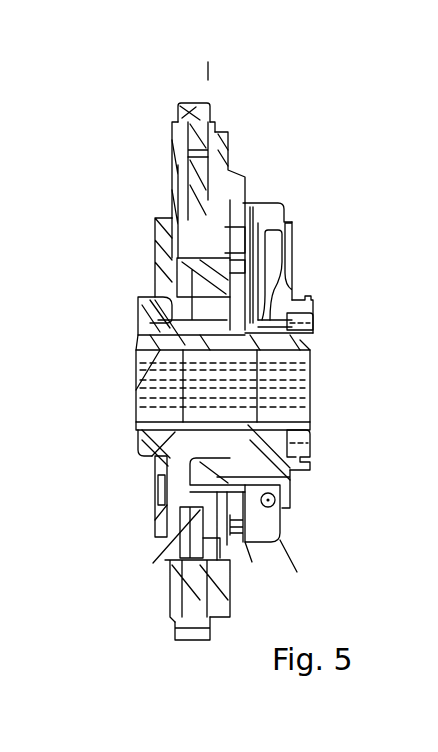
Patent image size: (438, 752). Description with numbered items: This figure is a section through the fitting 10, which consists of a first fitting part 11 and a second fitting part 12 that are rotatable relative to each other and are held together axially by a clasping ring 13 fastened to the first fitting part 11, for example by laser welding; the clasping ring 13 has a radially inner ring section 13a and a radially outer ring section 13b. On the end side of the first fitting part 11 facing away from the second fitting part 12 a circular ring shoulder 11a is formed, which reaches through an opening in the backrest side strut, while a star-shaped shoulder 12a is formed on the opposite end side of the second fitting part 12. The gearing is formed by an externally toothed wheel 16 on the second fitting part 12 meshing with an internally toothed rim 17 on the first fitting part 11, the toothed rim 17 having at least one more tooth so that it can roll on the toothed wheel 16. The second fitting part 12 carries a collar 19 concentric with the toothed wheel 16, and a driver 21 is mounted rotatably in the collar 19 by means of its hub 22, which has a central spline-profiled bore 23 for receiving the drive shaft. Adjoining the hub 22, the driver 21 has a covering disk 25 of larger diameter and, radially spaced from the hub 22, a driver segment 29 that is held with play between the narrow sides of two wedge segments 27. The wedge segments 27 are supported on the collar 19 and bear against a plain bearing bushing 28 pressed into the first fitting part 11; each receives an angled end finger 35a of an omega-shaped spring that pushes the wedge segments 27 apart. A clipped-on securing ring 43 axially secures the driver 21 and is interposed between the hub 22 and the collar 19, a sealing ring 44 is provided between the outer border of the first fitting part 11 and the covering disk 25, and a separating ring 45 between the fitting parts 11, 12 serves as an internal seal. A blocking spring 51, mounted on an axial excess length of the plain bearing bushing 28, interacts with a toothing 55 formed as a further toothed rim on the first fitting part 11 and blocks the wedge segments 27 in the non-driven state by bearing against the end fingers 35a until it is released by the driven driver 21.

The fitting 10 is at (330, 139).
The first fitting part 11 is at (254, 188).
The ring shoulder 11a is at (237, 553).
The second fitting part 12 is at (178, 190).
The star-shaped shoulder 12a is at (160, 547).
The clasping ring 13 is at (178, 128).
The inner ring section 13a is at (170, 598).
The outer ring section 13b is at (177, 635).
The externally toothed wheel 16 is at (212, 160).
The internally toothed rim 17 is at (208, 140).
The collar 19 is at (290, 330).
The driver 21 is at (313, 421).
The hub 22 is at (270, 360).
The bore 23 is at (152, 398).
The covering disk 25 is at (288, 258).
The wedge segments 27 is at (150, 297).
The plain bearing bushing 28 is at (256, 503).
The driver segment 29 is at (288, 477).
The end finger 35a is at (190, 263).
The securing ring 43 is at (158, 477).
The sealing ring 44 is at (278, 532).
The separating ring 45 is at (172, 226).
The blocking spring 51 is at (266, 233).
The toothing 55 is at (286, 224).